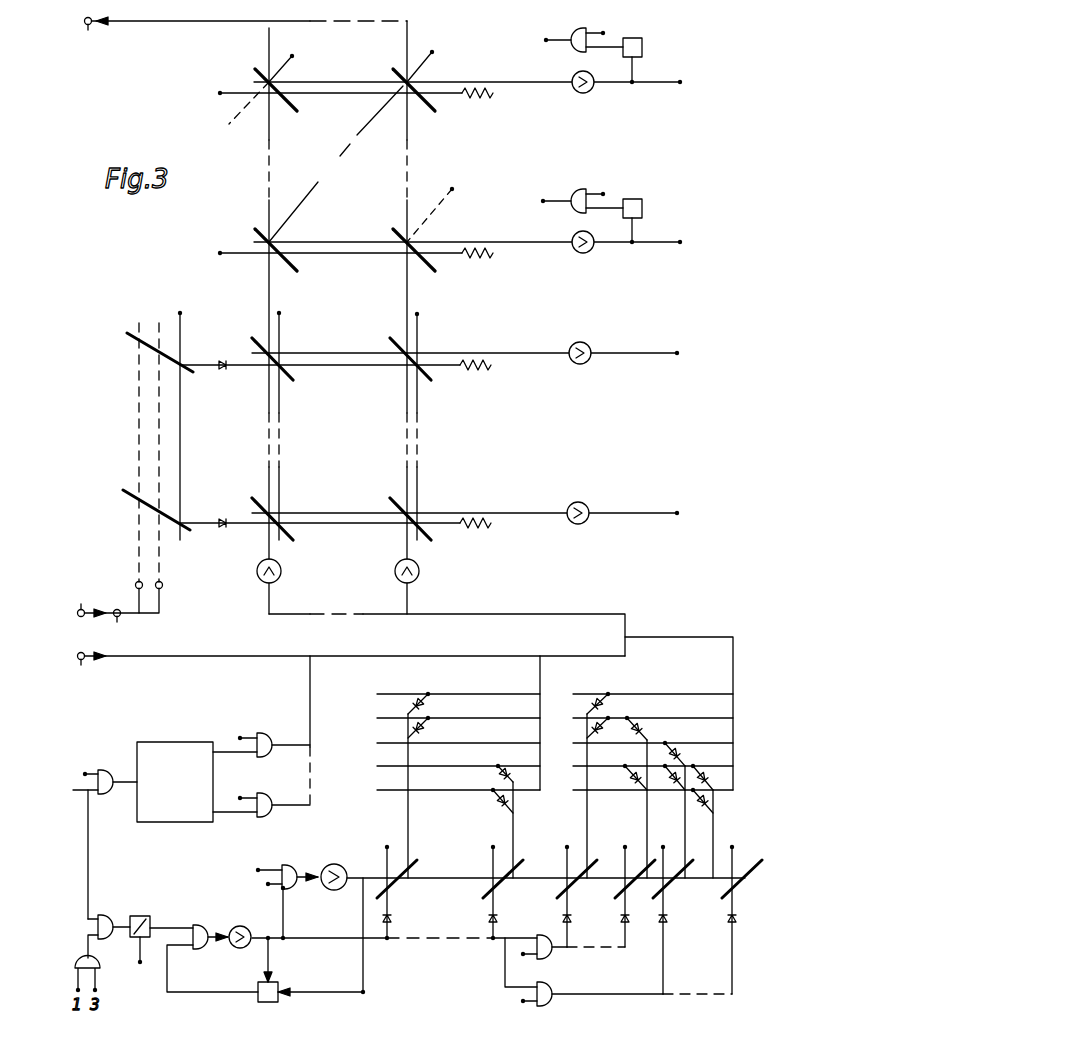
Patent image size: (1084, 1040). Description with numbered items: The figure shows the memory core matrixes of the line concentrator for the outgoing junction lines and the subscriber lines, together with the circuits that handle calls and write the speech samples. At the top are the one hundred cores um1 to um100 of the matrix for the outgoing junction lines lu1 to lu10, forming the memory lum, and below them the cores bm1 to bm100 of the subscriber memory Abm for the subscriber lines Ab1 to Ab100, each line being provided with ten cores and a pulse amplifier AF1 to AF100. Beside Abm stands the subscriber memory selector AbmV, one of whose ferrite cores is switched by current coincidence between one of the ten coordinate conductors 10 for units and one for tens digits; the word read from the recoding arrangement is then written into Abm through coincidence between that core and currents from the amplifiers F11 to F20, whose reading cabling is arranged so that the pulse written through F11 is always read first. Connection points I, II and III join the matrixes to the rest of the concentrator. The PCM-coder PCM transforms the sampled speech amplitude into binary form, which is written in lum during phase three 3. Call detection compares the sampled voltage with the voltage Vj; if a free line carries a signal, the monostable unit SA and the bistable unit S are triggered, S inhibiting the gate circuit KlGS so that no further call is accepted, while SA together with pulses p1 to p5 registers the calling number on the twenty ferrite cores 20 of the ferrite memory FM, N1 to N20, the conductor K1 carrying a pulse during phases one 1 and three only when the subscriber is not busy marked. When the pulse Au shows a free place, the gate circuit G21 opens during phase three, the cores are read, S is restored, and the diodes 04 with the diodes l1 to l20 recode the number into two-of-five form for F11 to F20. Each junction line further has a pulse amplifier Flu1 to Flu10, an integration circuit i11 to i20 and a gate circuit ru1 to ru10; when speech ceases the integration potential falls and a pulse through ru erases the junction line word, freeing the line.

The connection point I is at (245, 33).
The connection point II is at (347, 667).
The connection point III is at (105, 604).
The memory core um1 is at (258, 70).
The memory core um100 is at (420, 238).
The memory for outgoing junction lines lum is at (336, 164).
The gate circuit ru1 is at (570, 32).
The gate circuit ru10 is at (570, 193).
The integration circuit i11 is at (642, 47).
The integration circuit i20 is at (642, 208).
The pulse amplifier Flu1 is at (579, 93).
The pulse amplifier Flu10 is at (576, 254).
The outgoing junction line lu1 is at (655, 82).
The outgoing junction line lu10 is at (660, 242).
The memory core bm1 is at (256, 336).
The memory core bm100 is at (422, 510).
The pulse amplifier AF1 is at (573, 368).
The pulse amplifier AF100 is at (570, 524).
The subscriber line Ab1 is at (656, 354).
The subscriber line Ab100 is at (666, 514).
The subscriber memory selector AbmV is at (284, 451).
The subscriber memory Abm is at (337, 441).
The coordinate conductors 10 is at (172, 585).
The ferrite cores 20 is at (115, 643).
The amplifier F11 is at (285, 585).
The amplifier F20 is at (422, 585).
The diodes 04 is at (555, 734).
The pulse p1 is at (623, 843).
The pulse p5 is at (676, 831).
The ferrite core N1 is at (396, 890).
The ferrite core N20 is at (738, 890).
The diode l1 is at (393, 918).
The diode l20 is at (726, 918).
The phase one pulse 1 is at (566, 949).
The phase three pulse 3 is at (618, 997).
The conductor K1 is at (103, 823).
The PCM-coder PCM is at (223, 771).
The comparison voltage Vj is at (138, 942).
The monostable unit SA is at (223, 925).
The gate circuit GS KlGS is at (196, 950).
The bistable unit S is at (266, 940).
The gate circuit G21 is at (268, 891).
The pulse Au is at (250, 867).
The ferrite memory FM is at (335, 860).